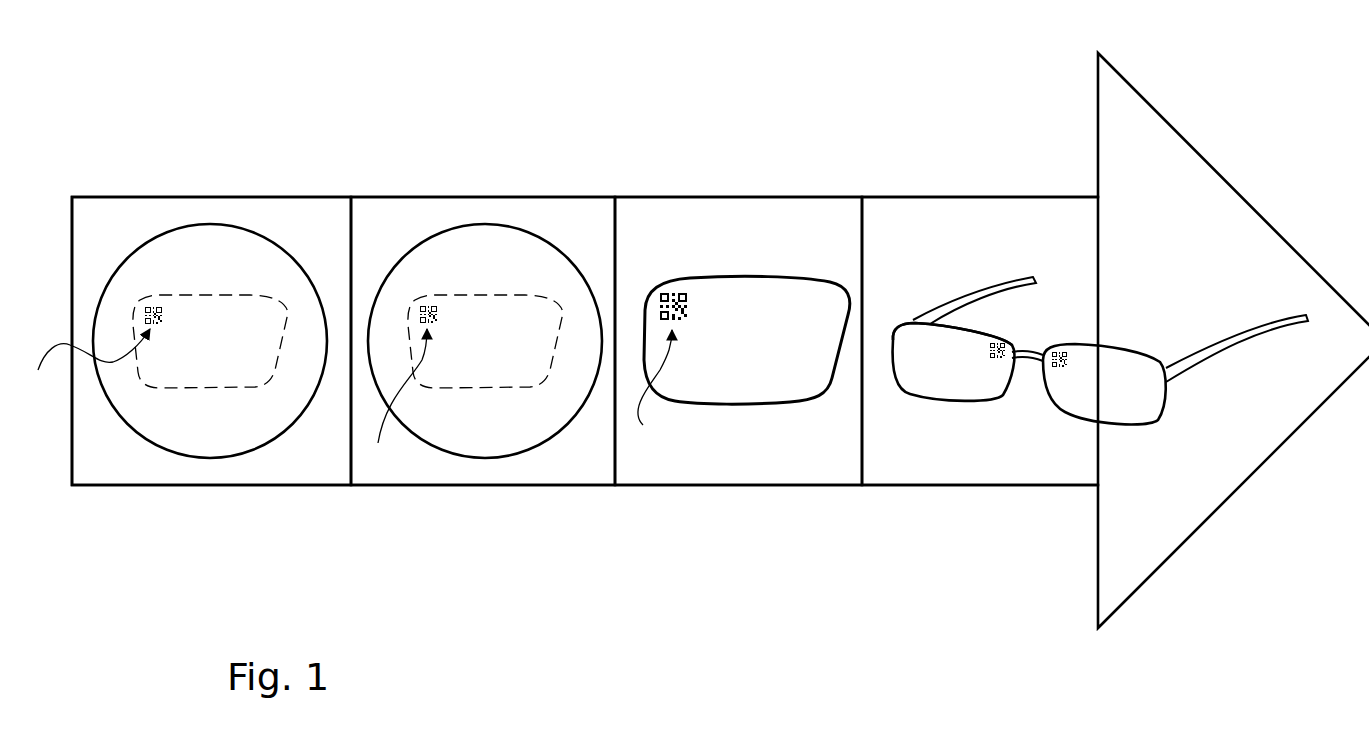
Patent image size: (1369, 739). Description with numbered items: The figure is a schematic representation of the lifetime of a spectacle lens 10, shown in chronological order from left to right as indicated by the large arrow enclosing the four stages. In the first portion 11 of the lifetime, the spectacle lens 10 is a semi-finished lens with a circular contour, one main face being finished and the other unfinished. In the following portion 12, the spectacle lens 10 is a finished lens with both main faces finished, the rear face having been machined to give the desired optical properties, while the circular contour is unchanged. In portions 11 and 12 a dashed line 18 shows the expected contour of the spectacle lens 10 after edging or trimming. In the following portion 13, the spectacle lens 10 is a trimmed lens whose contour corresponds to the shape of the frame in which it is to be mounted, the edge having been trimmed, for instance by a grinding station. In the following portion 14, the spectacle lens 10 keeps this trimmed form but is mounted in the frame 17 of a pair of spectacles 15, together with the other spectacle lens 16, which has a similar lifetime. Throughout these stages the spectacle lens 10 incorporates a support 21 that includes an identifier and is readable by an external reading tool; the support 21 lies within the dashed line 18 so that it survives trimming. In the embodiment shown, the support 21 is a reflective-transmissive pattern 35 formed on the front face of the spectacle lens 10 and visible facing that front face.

The spectacle lens 10 is at (212, 241).
The first portion of the lifetime 11 is at (310, 464).
The following portion of the lifetime 12 is at (568, 464).
The following portion of the lifetime 13 is at (811, 464).
The following portion of the lifetime 14 is at (998, 464).
The pair of spectacles 15 is at (1080, 278).
The other spectacle lens 16 is at (1122, 398).
The frame 17 is at (978, 329).
The dashed line 18 is at (224, 389).
The support 21 is at (343, 397).
The reflective-transmissive pattern 35 is at (153, 305).